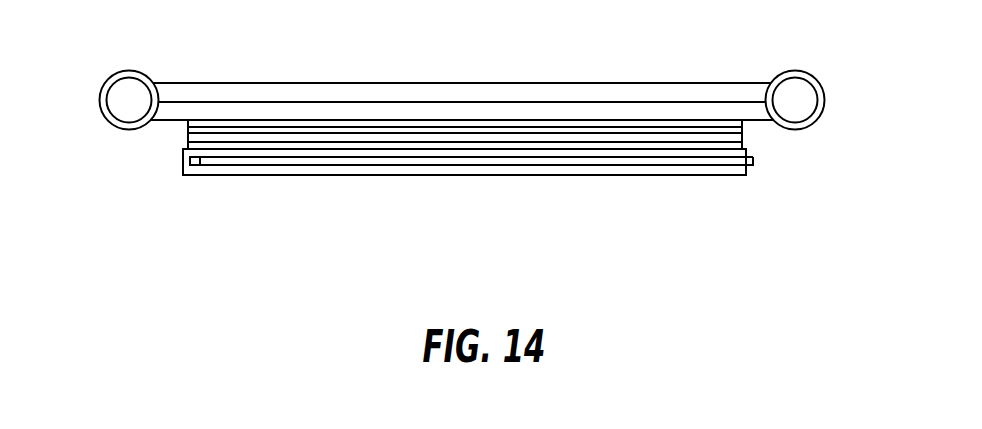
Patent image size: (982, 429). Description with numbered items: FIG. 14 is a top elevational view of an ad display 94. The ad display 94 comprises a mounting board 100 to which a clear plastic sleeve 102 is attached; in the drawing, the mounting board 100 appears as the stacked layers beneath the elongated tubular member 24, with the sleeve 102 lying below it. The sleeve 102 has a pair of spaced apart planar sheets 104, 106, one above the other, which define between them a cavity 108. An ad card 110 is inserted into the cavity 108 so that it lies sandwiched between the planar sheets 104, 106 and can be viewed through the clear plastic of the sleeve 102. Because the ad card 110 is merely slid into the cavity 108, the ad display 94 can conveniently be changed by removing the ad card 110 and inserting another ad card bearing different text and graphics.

The tubular frame member 24 is at (690, 93).
The ad display 94 is at (203, 177).
The mounting board 100 is at (515, 138).
The clear plastic sleeve 102 is at (307, 177).
The planar sheet 104 is at (630, 153).
The planar sheet 106 is at (685, 177).
The cavity 108 is at (192, 162).
The ad card 110 is at (755, 160).